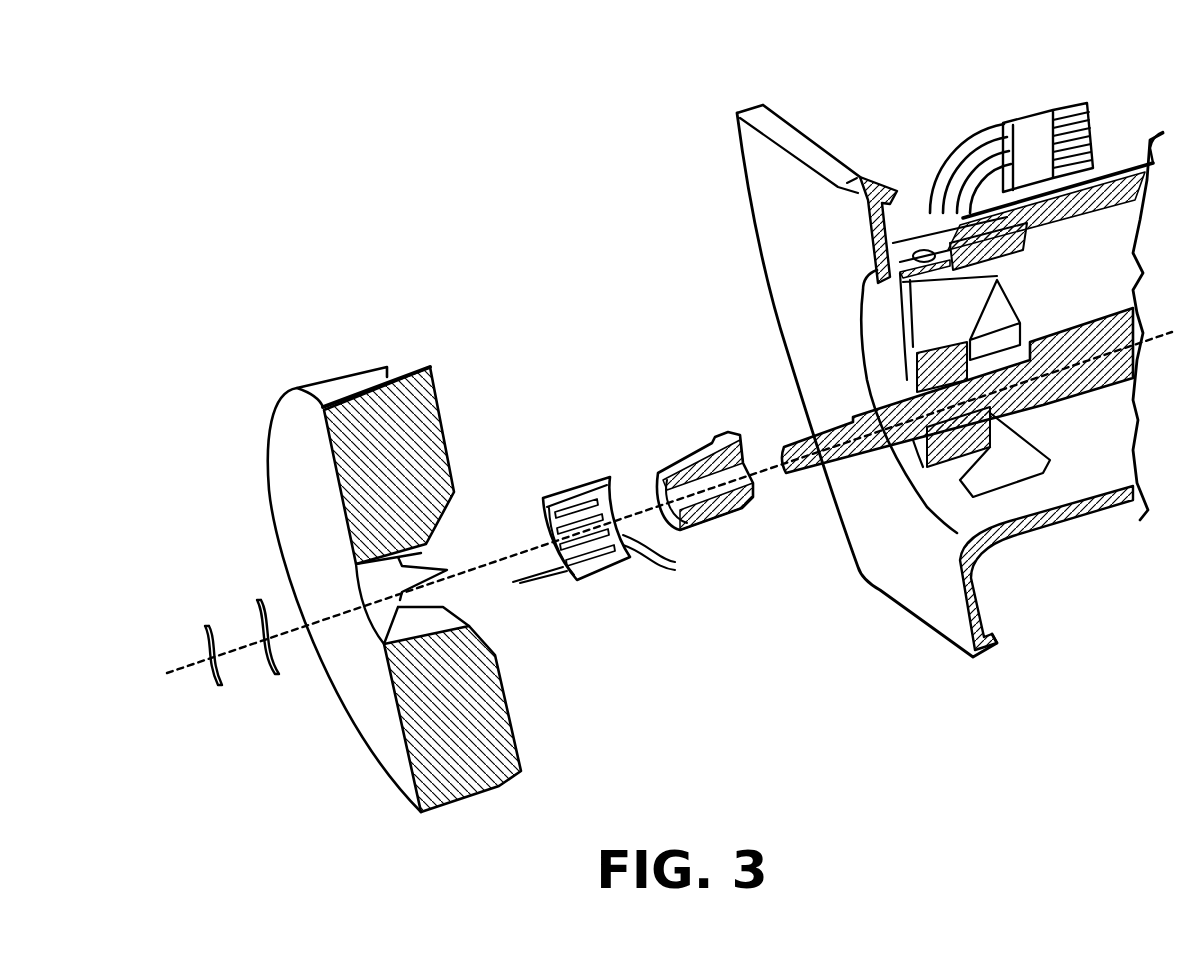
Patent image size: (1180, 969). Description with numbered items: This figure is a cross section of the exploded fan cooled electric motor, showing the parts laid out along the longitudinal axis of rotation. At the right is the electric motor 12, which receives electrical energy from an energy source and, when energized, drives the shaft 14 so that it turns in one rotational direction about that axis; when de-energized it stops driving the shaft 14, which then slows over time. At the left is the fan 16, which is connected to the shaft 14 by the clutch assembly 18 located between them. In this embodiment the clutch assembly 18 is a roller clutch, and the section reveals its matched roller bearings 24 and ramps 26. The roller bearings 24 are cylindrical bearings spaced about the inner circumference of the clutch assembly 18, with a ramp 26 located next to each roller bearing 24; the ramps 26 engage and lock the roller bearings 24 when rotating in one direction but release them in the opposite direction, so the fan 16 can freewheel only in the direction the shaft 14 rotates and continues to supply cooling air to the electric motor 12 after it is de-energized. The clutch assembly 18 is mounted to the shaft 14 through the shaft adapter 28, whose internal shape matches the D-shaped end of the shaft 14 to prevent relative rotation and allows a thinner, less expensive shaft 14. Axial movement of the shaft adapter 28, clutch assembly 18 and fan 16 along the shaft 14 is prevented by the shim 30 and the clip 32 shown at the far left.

The electric motor 12 is at (837, 217).
The shaft 14 is at (793, 453).
The fan 16 is at (307, 427).
The clutch assembly 18 is at (569, 487).
The roller bearings 24 is at (525, 590).
The ramps 26 is at (665, 558).
The shaft adapter 28 is at (700, 473).
The shim 30 is at (251, 607).
The clip 32 is at (205, 633).